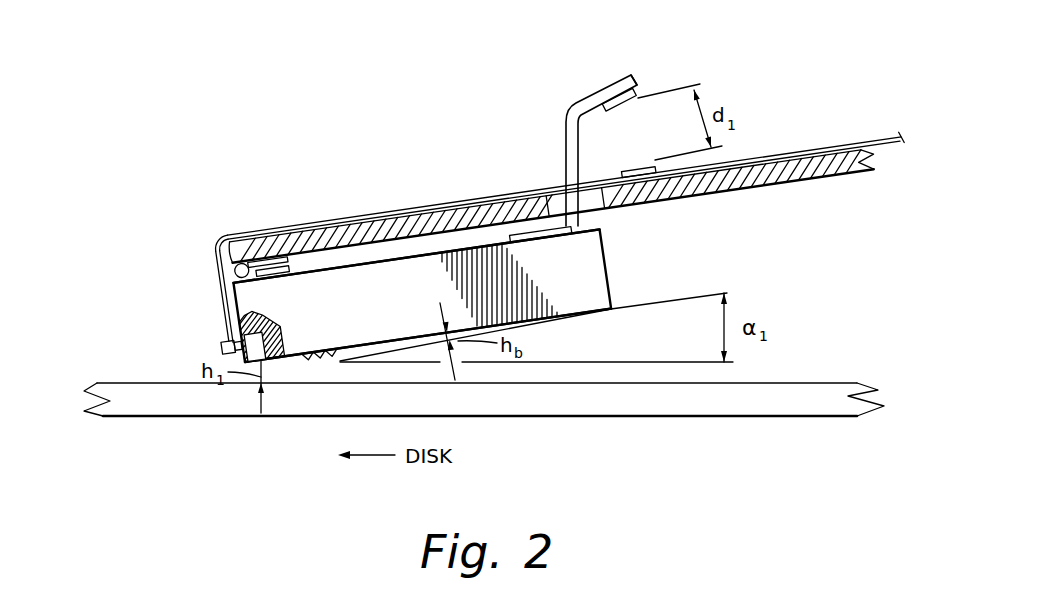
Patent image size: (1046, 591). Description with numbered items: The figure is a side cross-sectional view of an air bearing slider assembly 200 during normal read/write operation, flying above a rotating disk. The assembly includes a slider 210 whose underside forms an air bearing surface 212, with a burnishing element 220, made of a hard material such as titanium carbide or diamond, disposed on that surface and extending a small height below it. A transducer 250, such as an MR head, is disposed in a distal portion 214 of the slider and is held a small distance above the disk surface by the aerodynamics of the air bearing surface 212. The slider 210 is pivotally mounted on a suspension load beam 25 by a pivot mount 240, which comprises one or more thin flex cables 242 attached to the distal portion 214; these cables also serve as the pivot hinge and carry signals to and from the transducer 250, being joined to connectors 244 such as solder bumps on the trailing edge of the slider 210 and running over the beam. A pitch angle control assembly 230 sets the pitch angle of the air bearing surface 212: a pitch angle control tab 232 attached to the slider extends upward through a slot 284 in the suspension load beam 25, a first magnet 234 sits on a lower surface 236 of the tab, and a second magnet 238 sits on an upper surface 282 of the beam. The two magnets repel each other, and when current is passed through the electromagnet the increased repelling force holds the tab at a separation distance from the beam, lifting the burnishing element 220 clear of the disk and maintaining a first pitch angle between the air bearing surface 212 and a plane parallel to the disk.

The air bearing slider assembly 200 is at (185, 160).
The slider 210 is at (598, 270).
The air bearing surface 212 is at (371, 262).
The distal portion 214 is at (247, 300).
The burnishing element 220 is at (316, 370).
The pitch angle control assembly 230 is at (693, 59).
The pitch angle control tab 232 is at (608, 90).
The first magnet 234 is at (617, 113).
The lower surface 236 is at (647, 97).
The second magnet 238 is at (633, 172).
The pivot mount 240 is at (232, 262).
The thin flex cables 242 is at (232, 234).
The connectors 244 is at (224, 347).
The transducer 250 is at (258, 312).
The suspension load beam 25 is at (763, 187).
The upper surface 282 is at (830, 148).
The slot 284 is at (557, 188).